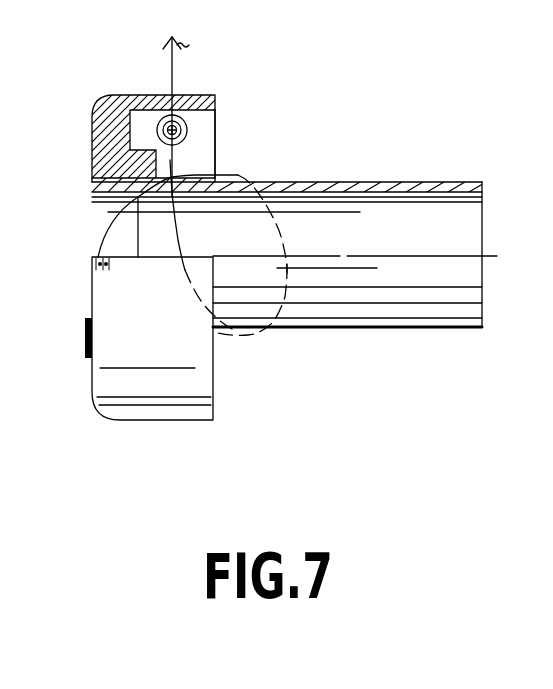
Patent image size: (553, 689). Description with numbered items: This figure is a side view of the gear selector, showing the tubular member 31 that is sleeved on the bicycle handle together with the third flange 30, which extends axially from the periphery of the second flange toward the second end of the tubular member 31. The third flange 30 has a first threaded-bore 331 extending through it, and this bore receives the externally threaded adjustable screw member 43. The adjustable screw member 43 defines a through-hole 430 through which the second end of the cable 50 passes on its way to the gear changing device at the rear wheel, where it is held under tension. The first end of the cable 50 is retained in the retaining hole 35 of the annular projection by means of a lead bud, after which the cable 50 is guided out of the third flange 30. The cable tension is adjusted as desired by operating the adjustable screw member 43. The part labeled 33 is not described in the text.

The third flange 30 is at (398, 175).
The tubular member 31 is at (463, 182).
The housing body 33 is at (203, 160).
The first threaded-bore 331 is at (188, 130).
The retaining hole 35 is at (97, 270).
The adjustable screw member 43 is at (155, 131).
The through-hole 430 is at (183, 120).
The cable 50 is at (240, 179).